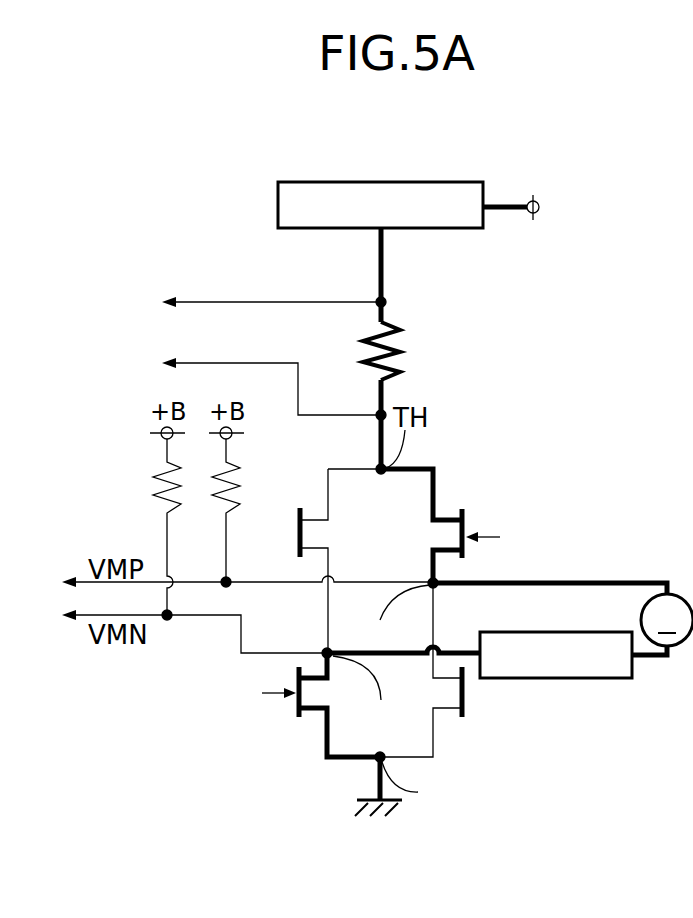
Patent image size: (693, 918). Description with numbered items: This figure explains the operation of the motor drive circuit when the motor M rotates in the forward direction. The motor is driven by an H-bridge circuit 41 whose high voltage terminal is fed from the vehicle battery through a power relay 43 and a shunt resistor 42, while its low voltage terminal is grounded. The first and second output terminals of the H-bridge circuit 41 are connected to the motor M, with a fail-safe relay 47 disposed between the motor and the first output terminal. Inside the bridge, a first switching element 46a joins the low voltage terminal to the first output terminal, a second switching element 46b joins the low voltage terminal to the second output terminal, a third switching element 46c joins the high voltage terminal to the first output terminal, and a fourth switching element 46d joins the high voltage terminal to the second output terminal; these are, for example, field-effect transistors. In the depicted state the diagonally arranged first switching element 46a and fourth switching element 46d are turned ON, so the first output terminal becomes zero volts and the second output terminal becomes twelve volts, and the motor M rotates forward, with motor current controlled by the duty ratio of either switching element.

The H-bridge circuit 41 is at (455, 598).
The shunt resistor 42 is at (388, 342).
The power relay 43 is at (361, 190).
The first switching element 46a is at (297, 705).
The second switching element 46b is at (465, 705).
The third switching element 46c is at (298, 530).
The fourth switching element 46d is at (466, 528).
The fail-safe relay 47 is at (530, 632).